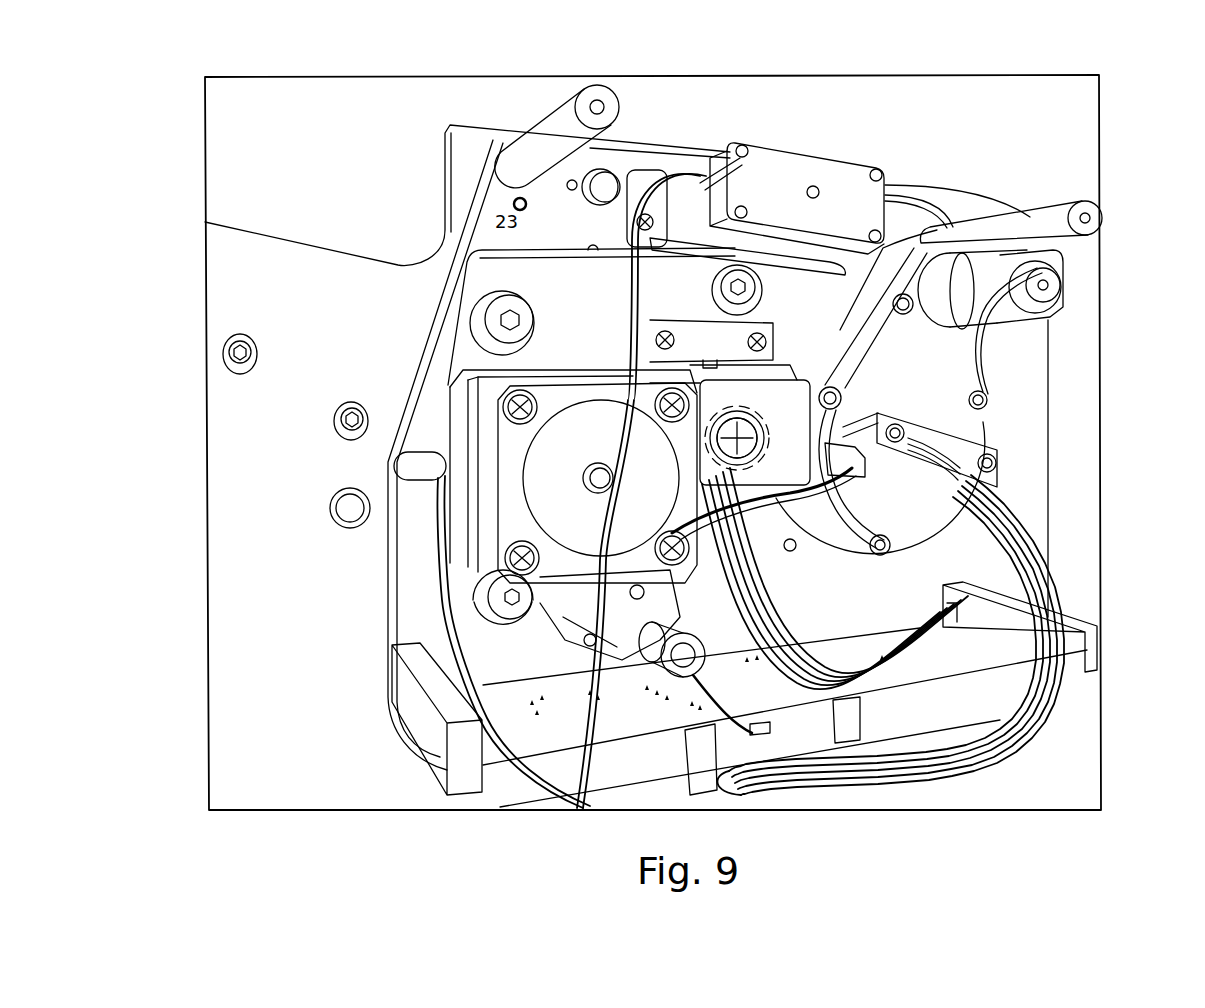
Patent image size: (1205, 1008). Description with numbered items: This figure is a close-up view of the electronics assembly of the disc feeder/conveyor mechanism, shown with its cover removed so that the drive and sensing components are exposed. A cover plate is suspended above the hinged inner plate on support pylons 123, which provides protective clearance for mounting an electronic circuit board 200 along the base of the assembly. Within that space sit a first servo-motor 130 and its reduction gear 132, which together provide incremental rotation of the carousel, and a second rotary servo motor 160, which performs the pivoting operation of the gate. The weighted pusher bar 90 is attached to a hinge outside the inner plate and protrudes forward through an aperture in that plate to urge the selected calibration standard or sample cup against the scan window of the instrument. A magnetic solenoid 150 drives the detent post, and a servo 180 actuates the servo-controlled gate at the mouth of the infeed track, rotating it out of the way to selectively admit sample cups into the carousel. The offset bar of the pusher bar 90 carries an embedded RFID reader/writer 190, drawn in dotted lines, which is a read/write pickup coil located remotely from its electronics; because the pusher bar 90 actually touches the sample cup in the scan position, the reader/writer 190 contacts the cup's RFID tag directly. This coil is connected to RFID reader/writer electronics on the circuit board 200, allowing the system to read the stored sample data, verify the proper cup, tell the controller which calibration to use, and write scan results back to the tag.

The weighted pusher bar 90 is at (728, 407).
The support pylons 123 is at (1090, 207).
The first servo-motor 130 is at (1067, 288).
The reduction gear 132 is at (957, 422).
The magnetic solenoid 150 is at (657, 655).
The second rotary servo motor 160 is at (447, 427).
The servo 180 is at (818, 150).
The RFID reader/writer 190 is at (730, 425).
The electronic circuit board 200 is at (976, 667).